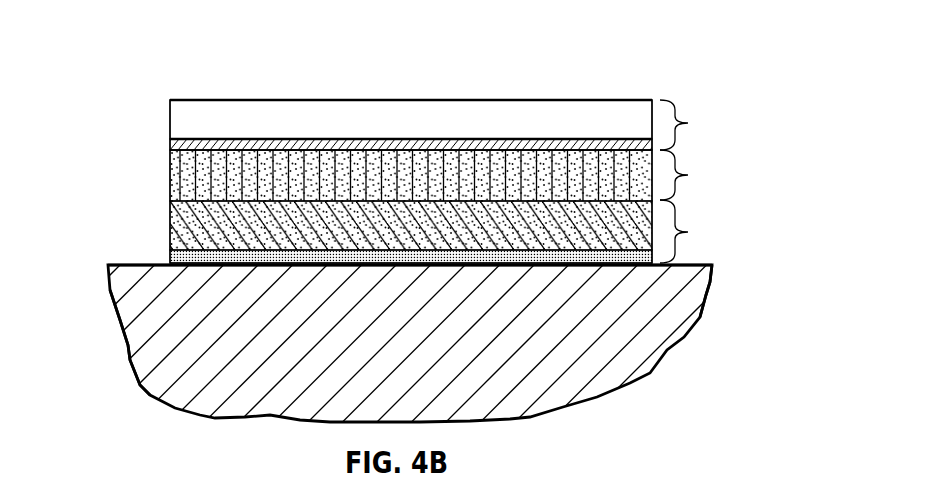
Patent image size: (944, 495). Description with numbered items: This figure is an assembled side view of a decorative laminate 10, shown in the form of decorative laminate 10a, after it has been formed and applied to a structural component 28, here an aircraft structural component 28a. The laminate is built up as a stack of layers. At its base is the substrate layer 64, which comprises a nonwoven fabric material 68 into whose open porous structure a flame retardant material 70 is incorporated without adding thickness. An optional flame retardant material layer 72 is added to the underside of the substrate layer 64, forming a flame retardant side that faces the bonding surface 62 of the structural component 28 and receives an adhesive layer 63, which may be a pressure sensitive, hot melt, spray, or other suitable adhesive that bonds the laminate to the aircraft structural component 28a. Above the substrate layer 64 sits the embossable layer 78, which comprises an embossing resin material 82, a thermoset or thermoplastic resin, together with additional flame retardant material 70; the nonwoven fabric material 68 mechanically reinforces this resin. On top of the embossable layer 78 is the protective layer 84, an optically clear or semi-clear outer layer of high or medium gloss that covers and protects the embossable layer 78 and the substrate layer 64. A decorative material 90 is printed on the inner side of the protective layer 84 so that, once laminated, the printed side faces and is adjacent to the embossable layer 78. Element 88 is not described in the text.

The decorative laminate 10 is at (212, 88).
The decorative laminate 10a is at (275, 100).
The protective top layer 88 is at (175, 110).
The decorative material 90 is at (173, 140).
The embossing resin material 82 is at (177, 152).
The flame retardant material 70 is at (185, 163).
The nonwoven fabric material 68 is at (172, 205).
The flame retardant material layer 72 is at (172, 243).
The protective layer 84 is at (469, 96).
The embossable layer 78 is at (474, 188).
The substrate layer 64 is at (466, 221).
The structural component 28 is at (116, 338).
The aircraft structural component 28a is at (137, 352).
The adhesive layer 63 is at (173, 266).
The bonding surface 62 is at (712, 266).